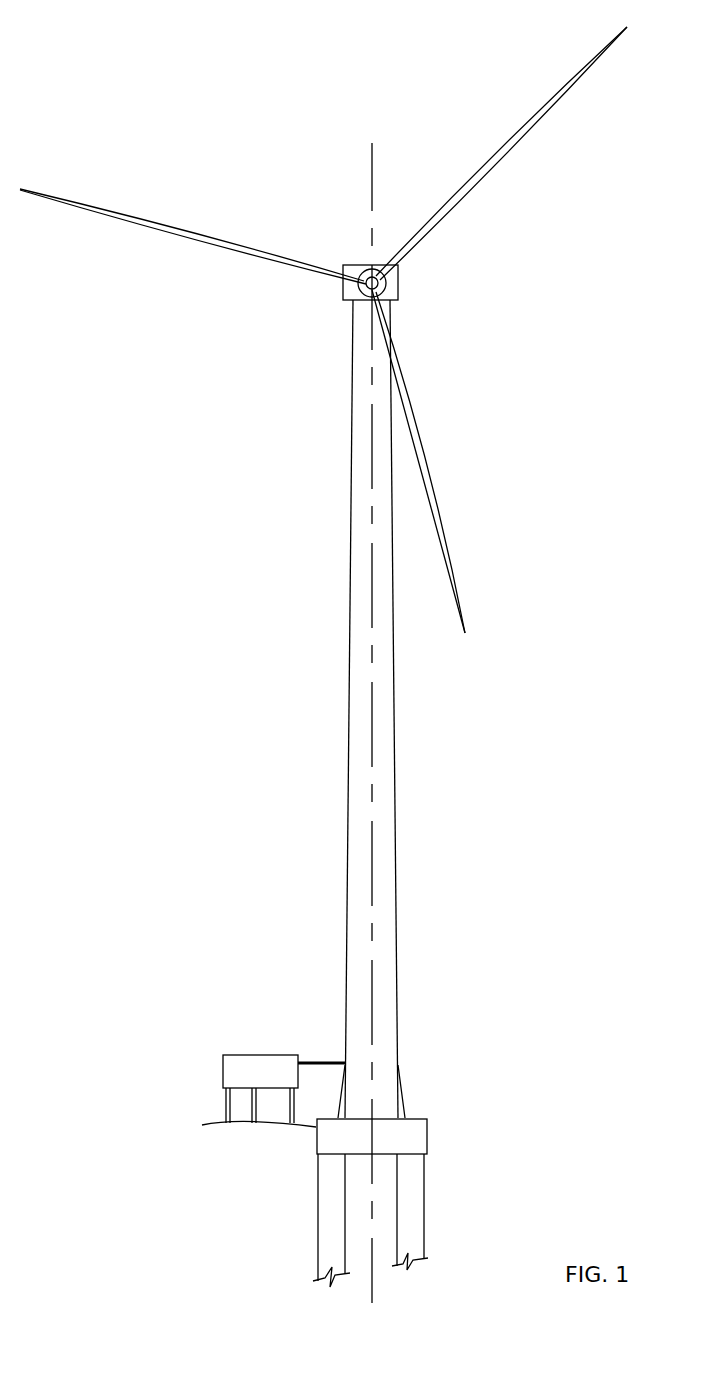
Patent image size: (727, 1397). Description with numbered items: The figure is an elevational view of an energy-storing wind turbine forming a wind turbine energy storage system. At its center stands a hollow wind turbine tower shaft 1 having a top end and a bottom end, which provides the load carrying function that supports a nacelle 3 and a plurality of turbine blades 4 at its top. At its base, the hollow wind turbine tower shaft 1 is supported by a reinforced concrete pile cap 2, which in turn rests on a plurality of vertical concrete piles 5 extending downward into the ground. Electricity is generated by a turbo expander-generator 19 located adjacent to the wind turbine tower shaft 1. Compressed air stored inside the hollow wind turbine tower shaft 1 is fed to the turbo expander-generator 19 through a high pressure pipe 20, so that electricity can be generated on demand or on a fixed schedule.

The hollow wind turbine tower shaft 1 is at (395, 877).
The reinforced concrete pile cap 2 is at (427, 1138).
The nacelle 3 is at (399, 284).
The turbine blades 4 is at (428, 463).
The vertical concrete piles 5 is at (424, 1203).
The turbo expander-generator 19 is at (258, 1055).
The high pressure pipe 20 is at (317, 1062).